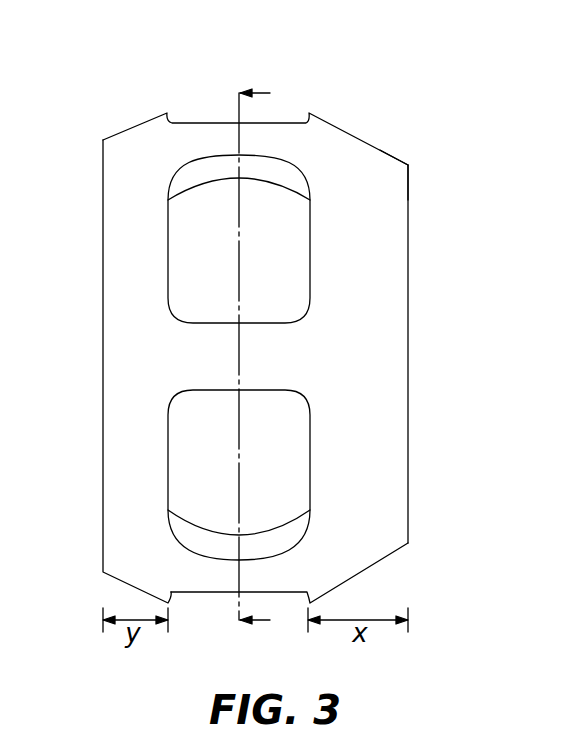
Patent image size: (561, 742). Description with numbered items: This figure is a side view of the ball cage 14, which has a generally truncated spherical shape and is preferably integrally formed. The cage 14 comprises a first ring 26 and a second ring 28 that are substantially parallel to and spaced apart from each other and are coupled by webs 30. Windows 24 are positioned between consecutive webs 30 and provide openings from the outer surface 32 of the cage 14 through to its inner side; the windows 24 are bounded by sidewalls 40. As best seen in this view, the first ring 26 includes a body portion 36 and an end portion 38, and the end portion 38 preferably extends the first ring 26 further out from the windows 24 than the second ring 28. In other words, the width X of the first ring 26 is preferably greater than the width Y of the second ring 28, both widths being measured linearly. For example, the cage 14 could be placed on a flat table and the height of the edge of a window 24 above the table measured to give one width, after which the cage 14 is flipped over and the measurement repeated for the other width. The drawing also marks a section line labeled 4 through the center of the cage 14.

The bearing cage 14 is at (258, 337).
The window 24 is at (310, 243).
The first ring 26 is at (367, 335).
The second ring 28 is at (127, 430).
The webs 30 is at (205, 573).
The outer surface 32 is at (183, 369).
The body portion 36 is at (333, 150).
The end portion 38 is at (400, 168).
The sidewalls 40 is at (208, 173).
The section line 4- 4 is at (275, 361).